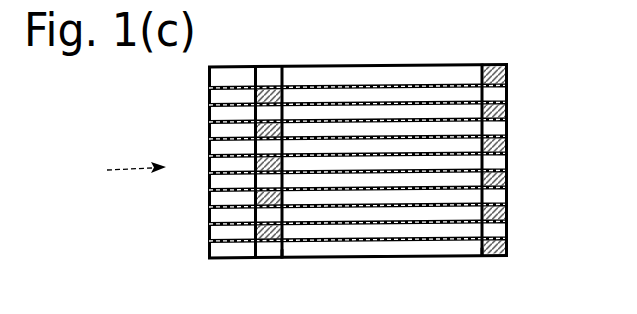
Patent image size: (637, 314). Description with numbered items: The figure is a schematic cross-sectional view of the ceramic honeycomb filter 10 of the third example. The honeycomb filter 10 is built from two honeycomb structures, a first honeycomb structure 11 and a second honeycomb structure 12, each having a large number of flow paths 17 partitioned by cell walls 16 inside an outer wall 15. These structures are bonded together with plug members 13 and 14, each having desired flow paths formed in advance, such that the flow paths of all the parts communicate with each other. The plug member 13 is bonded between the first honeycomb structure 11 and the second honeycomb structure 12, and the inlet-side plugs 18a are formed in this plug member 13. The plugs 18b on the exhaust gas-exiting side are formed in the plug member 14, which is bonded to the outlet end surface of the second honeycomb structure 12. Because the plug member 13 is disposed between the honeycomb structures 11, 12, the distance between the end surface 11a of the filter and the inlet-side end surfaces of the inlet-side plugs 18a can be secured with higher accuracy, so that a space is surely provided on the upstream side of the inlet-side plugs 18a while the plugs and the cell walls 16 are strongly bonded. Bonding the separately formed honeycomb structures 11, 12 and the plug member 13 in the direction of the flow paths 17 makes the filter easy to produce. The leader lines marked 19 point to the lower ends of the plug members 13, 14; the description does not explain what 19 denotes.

The honeycomb filter 10 is at (512, 48).
The first honeycomb structure 11 is at (220, 67).
The end surface 11a is at (210, 238).
The second honeycomb structure 12 is at (360, 73).
The plug member 13 is at (268, 67).
The plug member 14 is at (494, 64).
The outer wall 15 is at (423, 62).
The cell walls 16 is at (222, 98).
The flow paths 17 is at (222, 133).
The inlet-side plugs 18a is at (261, 200).
The plugs on an exhaust gas-exiting side 18b is at (507, 212).
The lead terminals 19 is at (250, 262).